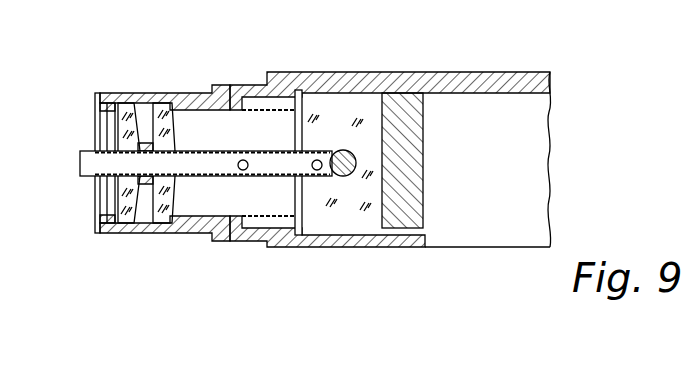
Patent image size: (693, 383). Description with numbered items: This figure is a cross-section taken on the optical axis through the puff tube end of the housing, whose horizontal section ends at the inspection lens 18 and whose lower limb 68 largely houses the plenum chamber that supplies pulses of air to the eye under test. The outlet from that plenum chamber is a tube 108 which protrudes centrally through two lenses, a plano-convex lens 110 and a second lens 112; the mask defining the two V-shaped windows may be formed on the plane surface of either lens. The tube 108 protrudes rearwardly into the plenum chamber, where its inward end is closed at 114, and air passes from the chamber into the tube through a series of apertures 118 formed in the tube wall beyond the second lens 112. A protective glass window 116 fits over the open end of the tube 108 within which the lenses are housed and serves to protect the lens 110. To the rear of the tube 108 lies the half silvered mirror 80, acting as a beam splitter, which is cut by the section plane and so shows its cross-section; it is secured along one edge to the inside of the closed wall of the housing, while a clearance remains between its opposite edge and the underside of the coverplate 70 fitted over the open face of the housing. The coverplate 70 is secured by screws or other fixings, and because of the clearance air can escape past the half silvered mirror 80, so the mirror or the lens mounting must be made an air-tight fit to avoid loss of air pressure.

The inspection lens 18 is at (170, 96).
The lower limb 68 is at (512, 82).
The coverplate 70 is at (377, 248).
The half silvered mirror 80 is at (372, 154).
The tube 108 is at (79, 177).
The plano-convex lens 110 is at (128, 133).
The second lens 112 is at (152, 120).
The closed inward end 114 is at (345, 150).
The protective glass window 116 is at (100, 199).
The apertures 118 is at (315, 170).